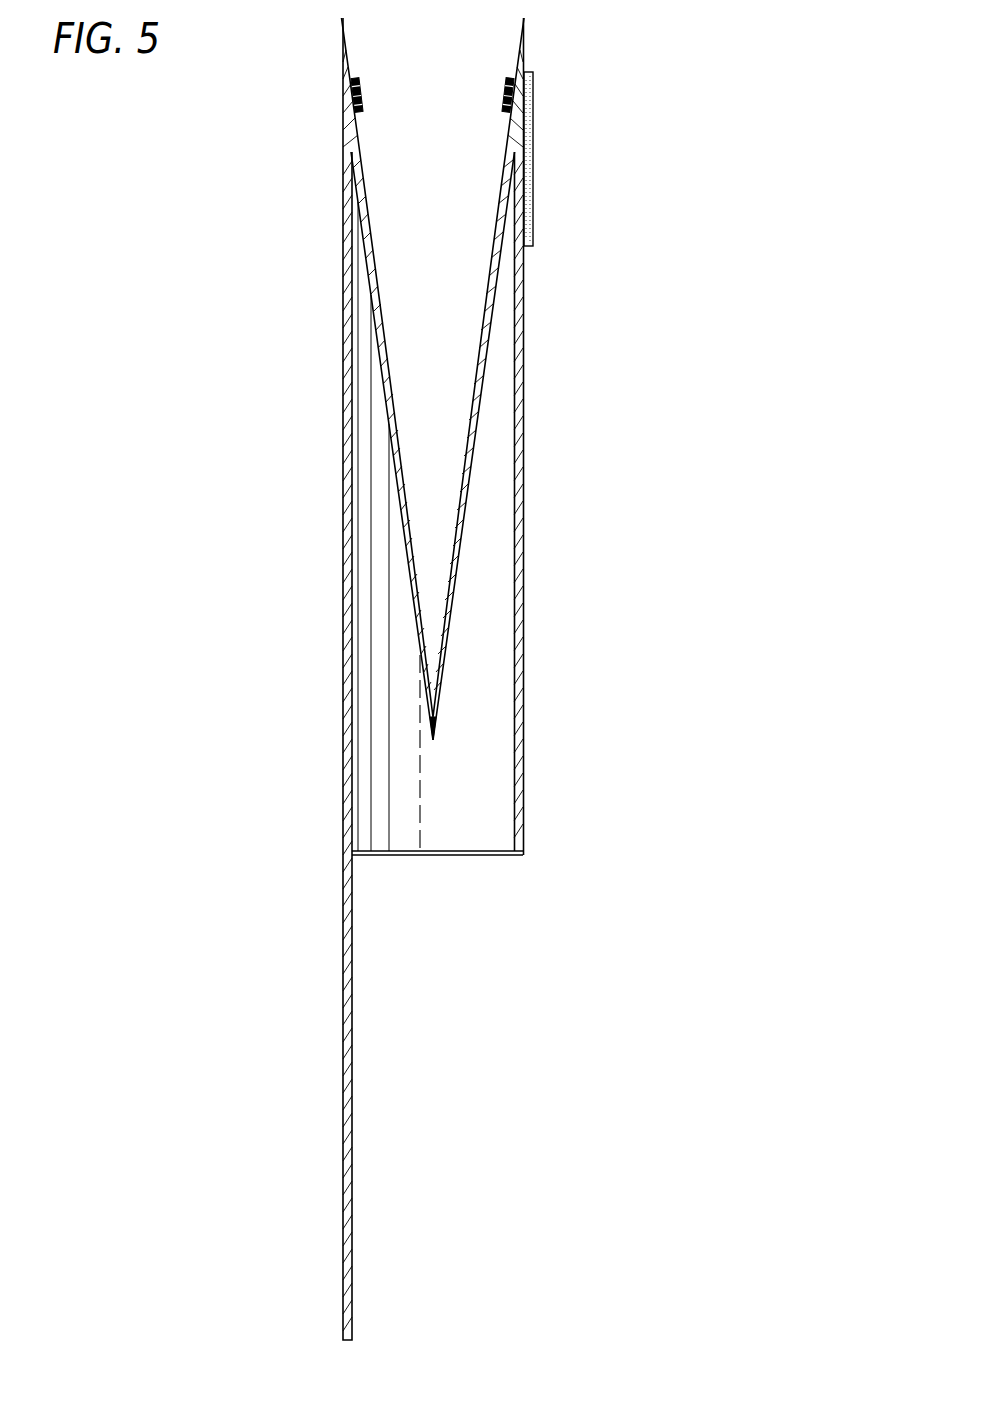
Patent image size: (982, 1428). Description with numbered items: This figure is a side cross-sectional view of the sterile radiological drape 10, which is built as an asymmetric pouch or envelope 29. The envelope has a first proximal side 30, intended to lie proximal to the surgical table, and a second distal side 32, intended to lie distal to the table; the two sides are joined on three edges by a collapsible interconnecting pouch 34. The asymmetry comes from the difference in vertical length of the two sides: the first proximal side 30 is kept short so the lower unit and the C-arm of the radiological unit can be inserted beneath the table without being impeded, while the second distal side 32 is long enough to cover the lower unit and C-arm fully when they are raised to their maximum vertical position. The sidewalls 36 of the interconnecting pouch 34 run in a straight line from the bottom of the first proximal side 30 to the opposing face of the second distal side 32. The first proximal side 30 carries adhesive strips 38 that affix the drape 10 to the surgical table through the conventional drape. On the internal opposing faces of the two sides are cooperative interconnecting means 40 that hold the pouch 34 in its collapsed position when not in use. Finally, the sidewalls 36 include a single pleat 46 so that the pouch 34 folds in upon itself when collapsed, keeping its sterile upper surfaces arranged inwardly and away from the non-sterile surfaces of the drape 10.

The sterile radiological drape 10 is at (633, 337).
The asymmetric pouch or envelope 29 is at (480, 683).
The first proximal side 30 is at (523, 484).
The second distal side 32 is at (342, 457).
The collapsible interconnecting pouch 34 is at (473, 393).
The sidewalls 36 is at (462, 853).
The adhesive strips 38 is at (533, 180).
The interconnecting means 40 is at (504, 91).
The pleat 46 is at (432, 741).